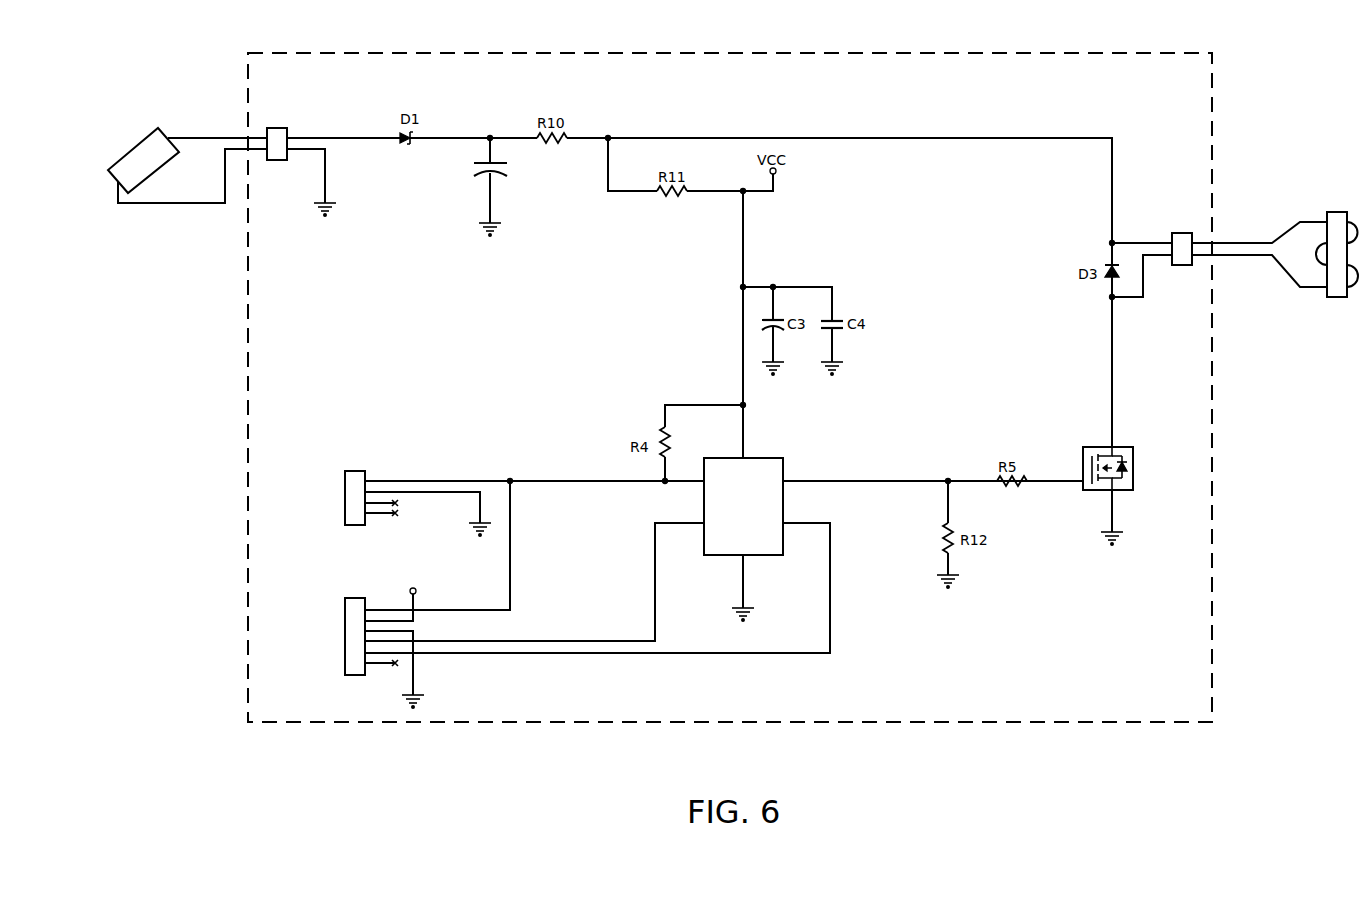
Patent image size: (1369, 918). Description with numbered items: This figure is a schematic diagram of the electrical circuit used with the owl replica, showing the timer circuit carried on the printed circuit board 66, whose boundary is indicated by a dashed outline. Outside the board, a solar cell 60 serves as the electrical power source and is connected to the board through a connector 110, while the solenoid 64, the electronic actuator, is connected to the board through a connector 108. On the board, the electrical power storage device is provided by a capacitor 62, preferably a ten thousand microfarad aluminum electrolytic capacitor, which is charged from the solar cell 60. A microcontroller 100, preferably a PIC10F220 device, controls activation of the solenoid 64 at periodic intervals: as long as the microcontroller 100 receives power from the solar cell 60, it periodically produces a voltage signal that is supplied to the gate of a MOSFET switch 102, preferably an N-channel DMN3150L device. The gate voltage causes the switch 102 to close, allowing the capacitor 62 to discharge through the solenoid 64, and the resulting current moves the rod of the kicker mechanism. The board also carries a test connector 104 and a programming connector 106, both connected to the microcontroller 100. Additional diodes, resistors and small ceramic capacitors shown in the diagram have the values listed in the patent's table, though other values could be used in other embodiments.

The solar cell 60 is at (142, 135).
The capacitor 62 is at (498, 177).
The solenoid 64 is at (1327, 218).
The printed circuit board 66 is at (1005, 52).
The microcontroller 100 is at (785, 467).
The MOSFET switch 102 is at (1133, 457).
The test connector 104 is at (343, 488).
The programming connector 106 is at (343, 612).
The connector 108 is at (1172, 238).
The connector 110 is at (287, 130).